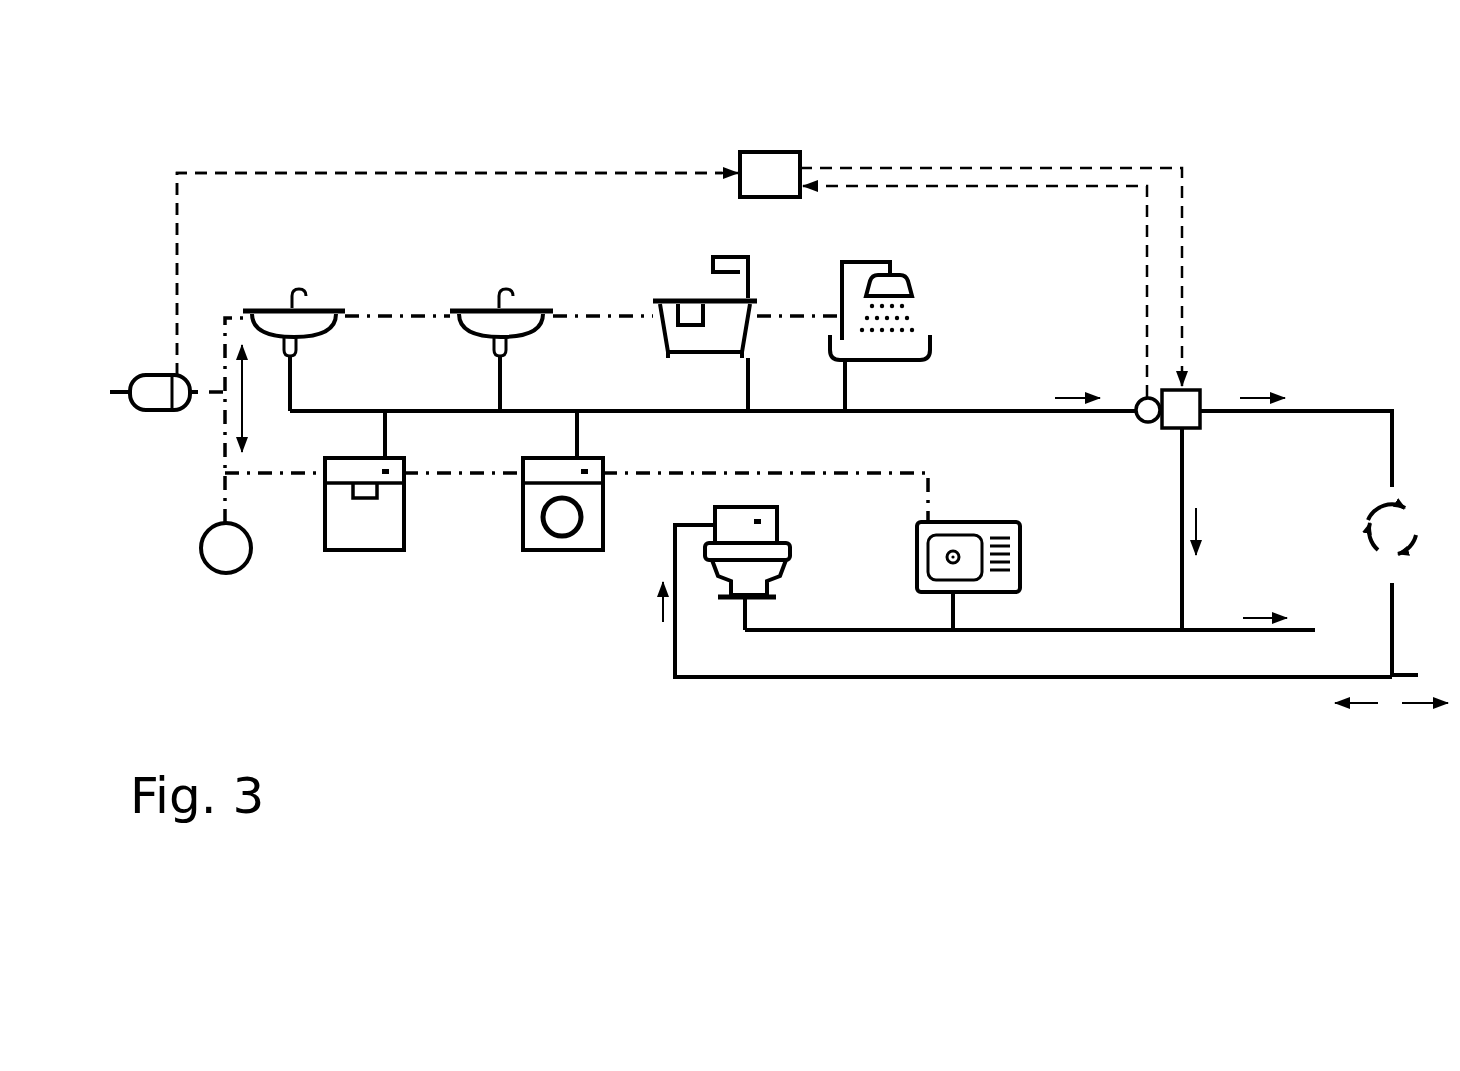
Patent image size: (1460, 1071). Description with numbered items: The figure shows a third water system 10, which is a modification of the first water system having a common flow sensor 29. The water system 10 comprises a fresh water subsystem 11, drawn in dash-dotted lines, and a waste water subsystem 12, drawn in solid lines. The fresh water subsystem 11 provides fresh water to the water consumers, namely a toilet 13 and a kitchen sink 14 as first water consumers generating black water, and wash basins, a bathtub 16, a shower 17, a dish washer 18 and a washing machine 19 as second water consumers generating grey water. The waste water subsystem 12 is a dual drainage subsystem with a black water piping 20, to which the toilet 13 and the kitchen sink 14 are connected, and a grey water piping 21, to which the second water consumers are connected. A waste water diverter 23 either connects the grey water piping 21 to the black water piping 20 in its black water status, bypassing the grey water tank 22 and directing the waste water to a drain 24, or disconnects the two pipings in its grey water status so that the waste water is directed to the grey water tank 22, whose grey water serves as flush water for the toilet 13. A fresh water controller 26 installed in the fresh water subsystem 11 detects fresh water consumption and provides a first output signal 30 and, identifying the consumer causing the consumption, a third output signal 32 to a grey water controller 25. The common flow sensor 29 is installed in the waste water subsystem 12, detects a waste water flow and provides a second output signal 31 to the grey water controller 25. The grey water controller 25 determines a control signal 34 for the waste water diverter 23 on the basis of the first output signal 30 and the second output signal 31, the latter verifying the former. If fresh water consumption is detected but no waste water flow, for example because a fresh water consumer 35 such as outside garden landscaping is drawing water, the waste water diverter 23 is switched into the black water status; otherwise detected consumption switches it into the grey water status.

The water system 10 is at (1282, 132).
The fresh water subsystem 11 is at (200, 474).
The waste water subsystem 12 is at (991, 390).
The toilet 13 is at (790, 557).
The kitchen sink 14 is at (1020, 561).
The bathtub 16 is at (670, 298).
The shower 17 is at (903, 275).
The dish washer 18 is at (368, 552).
The washing machine 19 is at (570, 552).
The black water piping 20 is at (1011, 636).
The grey water piping 21 is at (694, 416).
The grey water tank 22 is at (1362, 497).
The waste water diverter 23 is at (1183, 386).
The drain 24 is at (1220, 628).
The grey water controller 25 is at (773, 150).
The fresh water controller 26 is at (150, 372).
The common flow sensor 29 is at (1148, 424).
The first output signal 30 is at (434, 170).
The second output signal 31 is at (1080, 188).
The third output signal 32 is at (449, 274).
The control signal 34 is at (1121, 166).
The fresh water consumer 35 is at (226, 574).